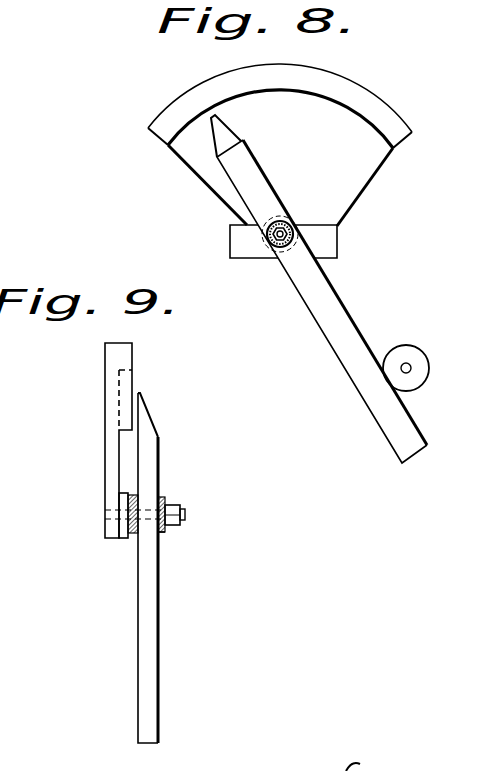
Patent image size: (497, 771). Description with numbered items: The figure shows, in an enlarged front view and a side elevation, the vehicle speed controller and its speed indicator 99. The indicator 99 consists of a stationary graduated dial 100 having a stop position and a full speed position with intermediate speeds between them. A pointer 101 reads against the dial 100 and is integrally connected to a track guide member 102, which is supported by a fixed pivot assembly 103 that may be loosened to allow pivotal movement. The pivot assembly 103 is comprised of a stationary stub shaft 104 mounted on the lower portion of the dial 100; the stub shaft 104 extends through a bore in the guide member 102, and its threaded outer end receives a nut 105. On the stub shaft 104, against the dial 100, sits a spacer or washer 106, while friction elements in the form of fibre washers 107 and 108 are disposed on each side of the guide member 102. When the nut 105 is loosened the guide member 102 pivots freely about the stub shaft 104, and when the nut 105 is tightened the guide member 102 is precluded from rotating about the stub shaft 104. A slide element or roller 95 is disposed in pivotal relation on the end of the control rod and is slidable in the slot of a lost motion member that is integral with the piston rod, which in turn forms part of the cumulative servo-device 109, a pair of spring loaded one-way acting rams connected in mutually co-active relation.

In FIG. 8, the slide element or roller 95 is at (416, 361).
In FIG. 8, the speed indicator 99 is at (388, 172).
In FIG. 9, the speed indicator 99 is at (97, 359).
In FIG. 8, the graduated dial 100 is at (437, 99).
In FIG. 9, the graduated dial 100 is at (108, 390).
In FIG. 8, the pointer 101 is at (221, 134).
In FIG. 9, the pointer 101 is at (146, 402).
In FIG. 8, the track guide member 102 is at (344, 308).
In FIG. 9, the track guide member 102 is at (150, 642).
In FIG. 8, the fixed pivot assembly 103 is at (312, 233).
In FIG. 9, the fixed pivot assembly 103 is at (191, 526).
In FIG. 8, the stationary stub shaft 104 is at (290, 213).
In FIG. 9, the stationary stub shaft 104 is at (182, 514).
In FIG. 8, the nut 105 is at (270, 255).
In FIG. 9, the nut 105 is at (164, 500).
In FIG. 9, the spacer or washer 106 is at (123, 540).
In FIG. 9, the fibre washer 107 is at (162, 527).
In FIG. 9, the fibre washer 108 is at (137, 493).
In FIG. 8, the cumulative servo-device 109 is at (262, 224).